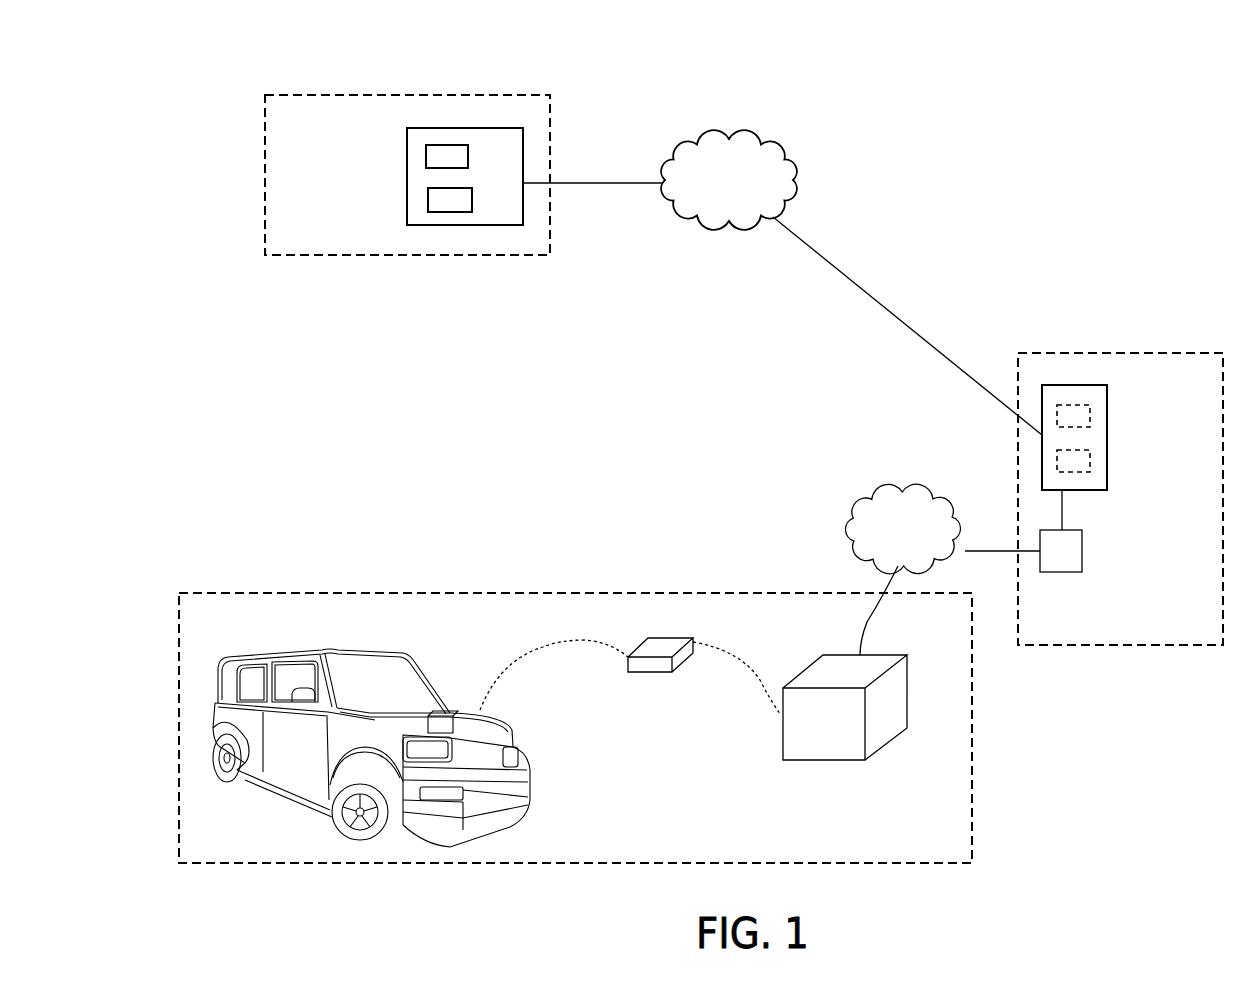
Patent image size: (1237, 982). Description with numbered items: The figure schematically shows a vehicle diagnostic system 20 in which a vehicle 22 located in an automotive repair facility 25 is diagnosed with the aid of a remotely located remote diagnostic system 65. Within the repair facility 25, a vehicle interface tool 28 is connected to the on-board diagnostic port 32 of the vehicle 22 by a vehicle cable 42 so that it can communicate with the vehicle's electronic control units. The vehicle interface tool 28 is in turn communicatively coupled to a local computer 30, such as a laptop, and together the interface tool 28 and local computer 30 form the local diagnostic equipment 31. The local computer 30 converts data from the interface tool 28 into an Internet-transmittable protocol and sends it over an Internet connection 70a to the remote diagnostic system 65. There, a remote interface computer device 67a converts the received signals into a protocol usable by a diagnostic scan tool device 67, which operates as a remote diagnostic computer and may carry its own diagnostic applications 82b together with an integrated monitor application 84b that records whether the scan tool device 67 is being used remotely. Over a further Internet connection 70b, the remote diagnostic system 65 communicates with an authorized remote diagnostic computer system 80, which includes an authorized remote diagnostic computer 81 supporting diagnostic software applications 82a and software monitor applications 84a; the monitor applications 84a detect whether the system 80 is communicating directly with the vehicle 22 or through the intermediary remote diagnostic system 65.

The vehicle diagnostic system 20 is at (592, 527).
The vehicle 22 is at (338, 650).
The automotive repair facility 25 is at (288, 593).
The vehicle interface tool 28 is at (650, 672).
The local computer 30 is at (907, 698).
The local diagnostic equipment 31 is at (670, 780).
The on-board diagnostic port 32 is at (450, 716).
The vehicle cable 42 is at (543, 645).
The remote diagnostic system 65 is at (1122, 647).
The diagnostic scan tool device 67 is at (1077, 383).
The remote interface computer device 67a is at (1067, 573).
The Internet connection 70a is at (940, 490).
The Internet connection 70b is at (773, 152).
The authorized remote diagnostic computer system 80 is at (505, 93).
The authorized remote diagnostic computer 81 is at (467, 227).
The diagnostic software application 82a is at (427, 155).
The diagnostic application 82b is at (1090, 413).
The software monitor application 84a is at (429, 200).
The monitor application 84b is at (1090, 462).